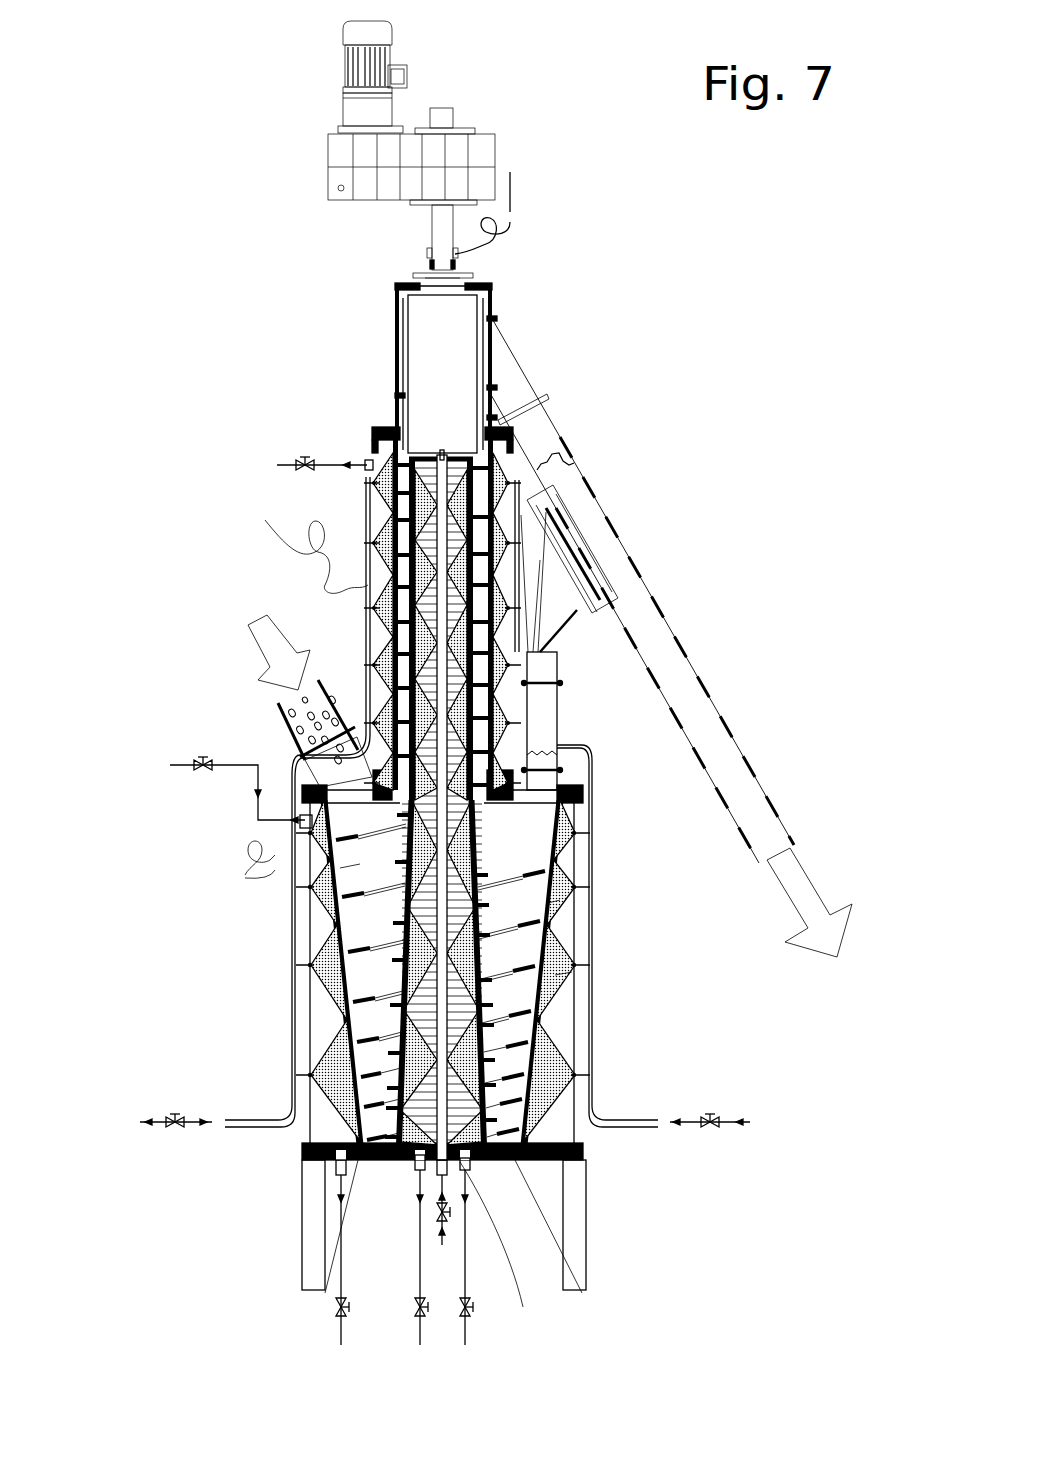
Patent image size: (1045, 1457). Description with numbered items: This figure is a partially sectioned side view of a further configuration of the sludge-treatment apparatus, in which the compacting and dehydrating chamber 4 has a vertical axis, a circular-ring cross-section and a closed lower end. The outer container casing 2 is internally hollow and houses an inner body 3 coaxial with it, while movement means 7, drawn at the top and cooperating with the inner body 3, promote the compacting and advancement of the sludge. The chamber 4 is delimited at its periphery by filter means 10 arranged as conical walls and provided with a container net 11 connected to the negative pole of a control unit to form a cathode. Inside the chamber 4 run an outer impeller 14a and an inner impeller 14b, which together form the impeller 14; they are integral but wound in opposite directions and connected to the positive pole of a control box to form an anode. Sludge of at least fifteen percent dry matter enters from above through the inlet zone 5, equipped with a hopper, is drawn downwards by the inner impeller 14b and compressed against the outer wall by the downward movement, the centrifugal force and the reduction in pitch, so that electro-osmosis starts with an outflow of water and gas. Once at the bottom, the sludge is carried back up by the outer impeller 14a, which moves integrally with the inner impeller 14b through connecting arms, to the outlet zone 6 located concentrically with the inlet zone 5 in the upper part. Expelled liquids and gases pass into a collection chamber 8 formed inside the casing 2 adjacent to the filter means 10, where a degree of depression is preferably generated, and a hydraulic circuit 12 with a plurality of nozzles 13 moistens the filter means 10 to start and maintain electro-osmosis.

The outer container casing 2 is at (370, 458).
The inner body 3 is at (455, 328).
The compacting and dehydrating chamber 4 is at (345, 868).
The inlet zone 5 is at (300, 692).
The outlet zone 6 is at (482, 363).
The movement means 7 is at (345, 30).
The collection chamber 8 is at (503, 506).
The filter means 10 is at (542, 1100).
The container net 11 is at (498, 636).
The hydraulic circuit 12 is at (250, 1122).
The nozzles 13 is at (310, 1075).
The impeller 14 is at (397, 395).
The outer impeller 14a is at (572, 972).
The inner impeller 14b is at (558, 898).